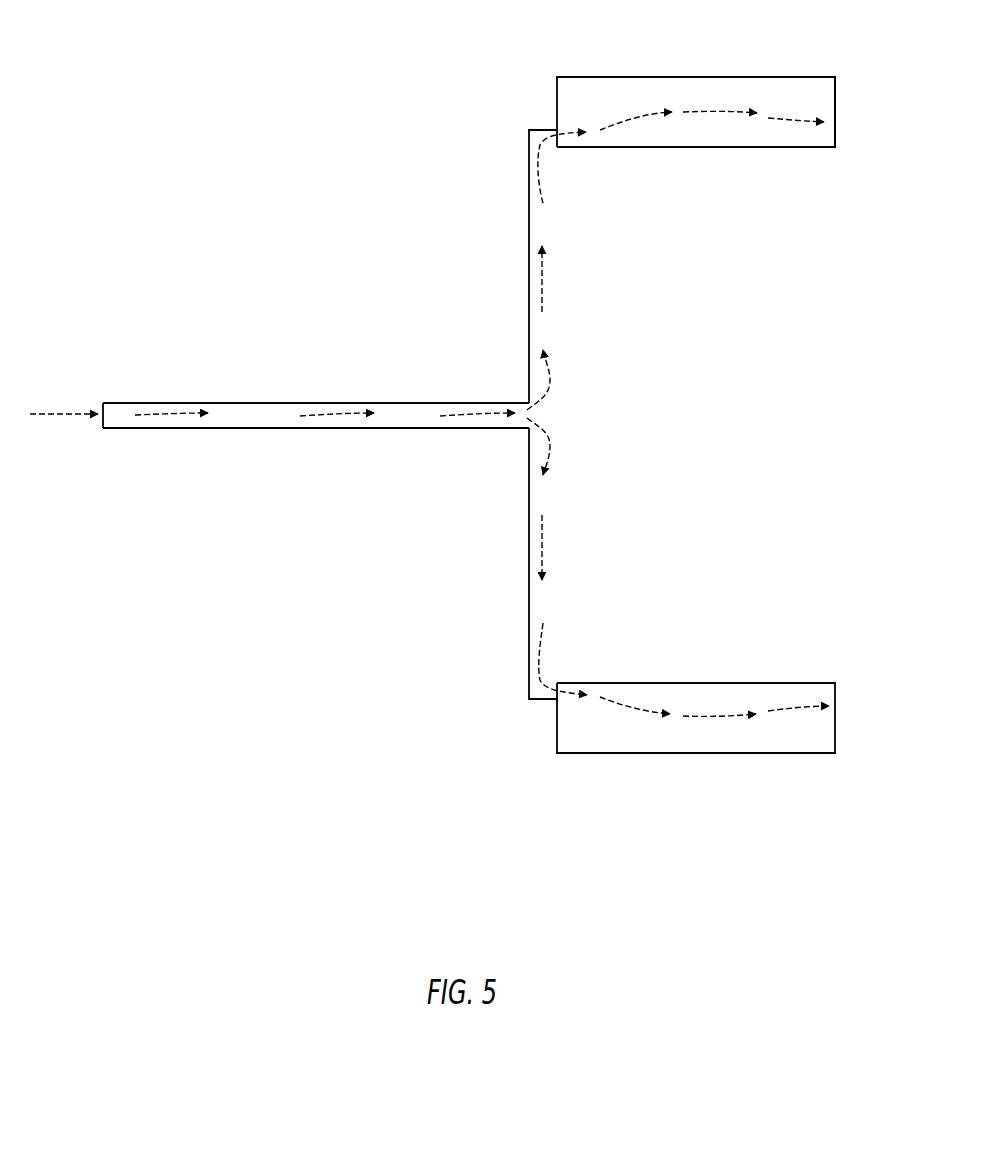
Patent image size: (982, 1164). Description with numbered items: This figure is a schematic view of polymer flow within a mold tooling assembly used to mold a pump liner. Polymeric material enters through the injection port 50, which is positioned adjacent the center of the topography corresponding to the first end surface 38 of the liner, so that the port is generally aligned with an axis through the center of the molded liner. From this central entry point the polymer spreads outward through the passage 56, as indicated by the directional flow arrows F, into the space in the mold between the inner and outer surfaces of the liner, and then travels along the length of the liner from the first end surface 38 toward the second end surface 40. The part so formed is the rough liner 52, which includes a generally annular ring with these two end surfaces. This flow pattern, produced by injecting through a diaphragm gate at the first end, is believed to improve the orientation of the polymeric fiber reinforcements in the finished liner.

The first end surface 38 is at (557, 90).
The second end surface 40 is at (835, 104).
The injection port 50 is at (98, 432).
The rough liner 52 is at (638, 790).
The vertical distribution channel 56 is at (529, 283).
The directional flow arrows F is at (635, 121).